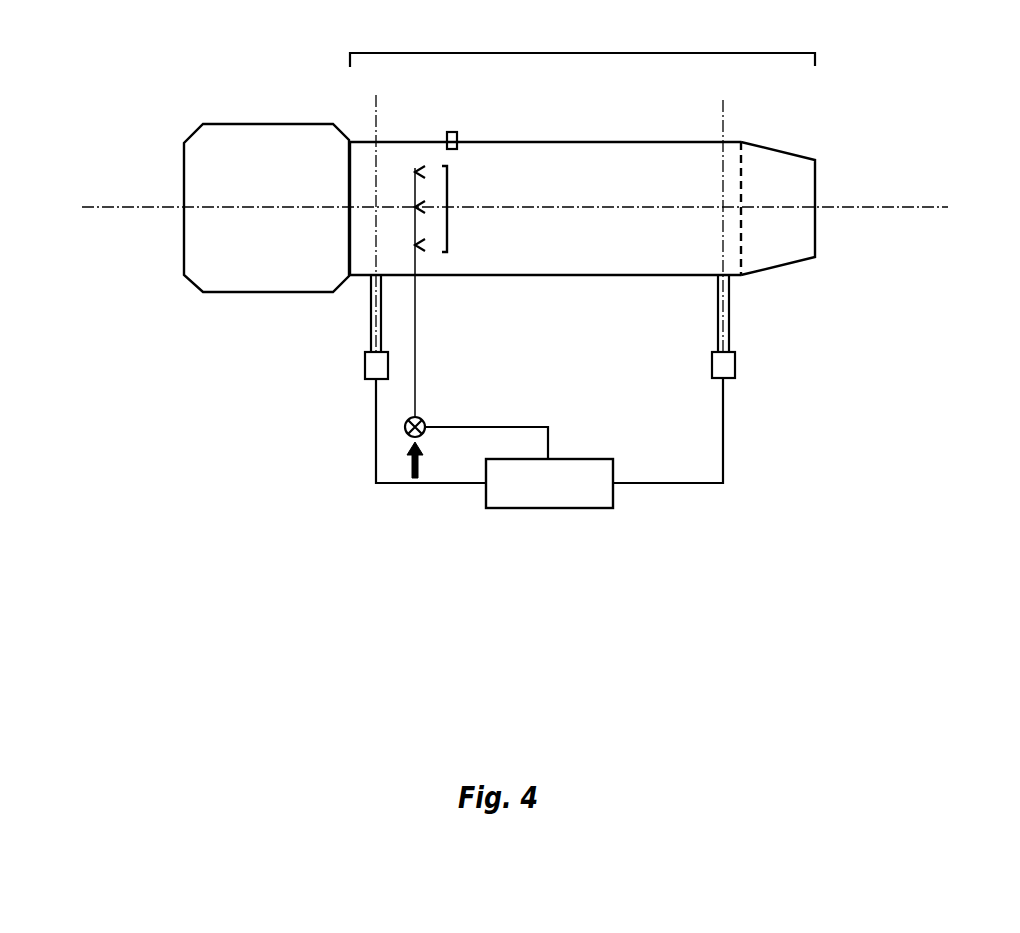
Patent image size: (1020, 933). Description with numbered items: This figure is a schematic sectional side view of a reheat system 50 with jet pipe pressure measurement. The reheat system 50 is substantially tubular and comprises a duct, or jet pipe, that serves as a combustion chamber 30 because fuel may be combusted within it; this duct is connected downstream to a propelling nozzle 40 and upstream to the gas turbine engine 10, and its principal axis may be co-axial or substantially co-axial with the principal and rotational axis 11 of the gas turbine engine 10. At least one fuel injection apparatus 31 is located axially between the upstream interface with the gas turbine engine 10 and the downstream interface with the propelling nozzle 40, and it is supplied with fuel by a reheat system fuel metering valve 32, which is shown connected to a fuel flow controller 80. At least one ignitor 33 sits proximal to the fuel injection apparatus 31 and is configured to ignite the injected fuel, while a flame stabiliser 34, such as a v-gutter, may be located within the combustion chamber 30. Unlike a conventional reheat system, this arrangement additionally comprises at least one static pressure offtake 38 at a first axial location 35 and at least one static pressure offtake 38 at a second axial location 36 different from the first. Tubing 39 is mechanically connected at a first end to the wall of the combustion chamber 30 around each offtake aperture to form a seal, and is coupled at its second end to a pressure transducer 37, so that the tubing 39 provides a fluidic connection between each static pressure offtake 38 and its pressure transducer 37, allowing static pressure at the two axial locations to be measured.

The gas turbine engine 10 is at (172, 108).
The principal and rotational axis 11 is at (103, 205).
The combustion chamber 30 is at (573, 142).
The fuel injection apparatus 31 is at (416, 265).
The fuel metering valve 32 is at (419, 421).
The ignitor 33 is at (457, 132).
The flame stabiliser 34 is at (447, 207).
The first axial location 35 is at (373, 117).
The second axial location 36 is at (730, 123).
The pressure transducer 37 is at (372, 378).
The static pressure offtake 38 is at (371, 278).
The tubing 39 is at (372, 333).
The propelling nozzle 40 is at (757, 145).
The reheat system 50 is at (582, 53).
The fuel flow controller 80 is at (595, 508).